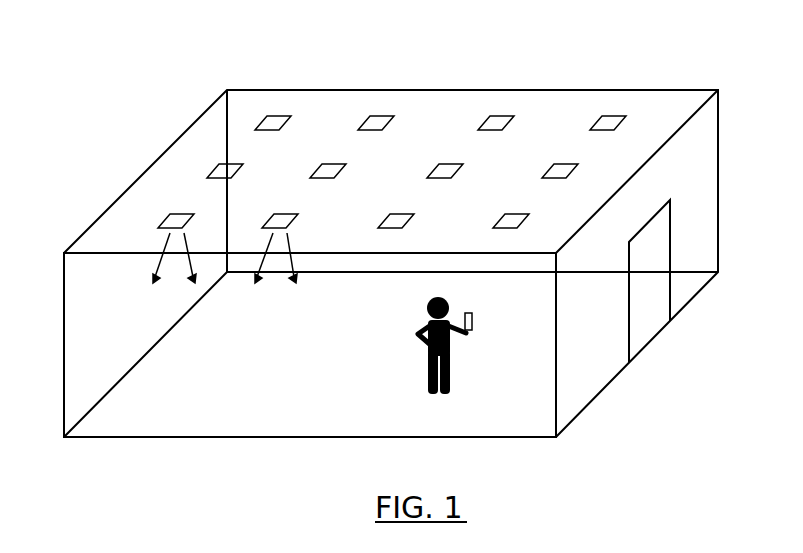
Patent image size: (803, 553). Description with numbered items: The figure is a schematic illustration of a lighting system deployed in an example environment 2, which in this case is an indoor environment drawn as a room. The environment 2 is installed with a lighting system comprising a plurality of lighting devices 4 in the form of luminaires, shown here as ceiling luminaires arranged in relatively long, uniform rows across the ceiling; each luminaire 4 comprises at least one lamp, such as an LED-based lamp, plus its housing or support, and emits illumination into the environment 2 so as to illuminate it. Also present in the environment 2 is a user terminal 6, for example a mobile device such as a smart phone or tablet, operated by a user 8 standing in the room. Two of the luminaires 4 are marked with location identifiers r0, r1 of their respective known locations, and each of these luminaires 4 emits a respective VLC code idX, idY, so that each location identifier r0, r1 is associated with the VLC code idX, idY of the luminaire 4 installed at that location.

The environment 2 is at (593, 90).
The lighting device 4 is at (514, 122).
The user terminal 6 is at (473, 322).
The user 8 is at (428, 358).
The location identifier r0 is at (182, 199).
The location identifier r1 is at (288, 199).
The VLC code idX is at (174, 266).
The VLC code idY is at (276, 266).